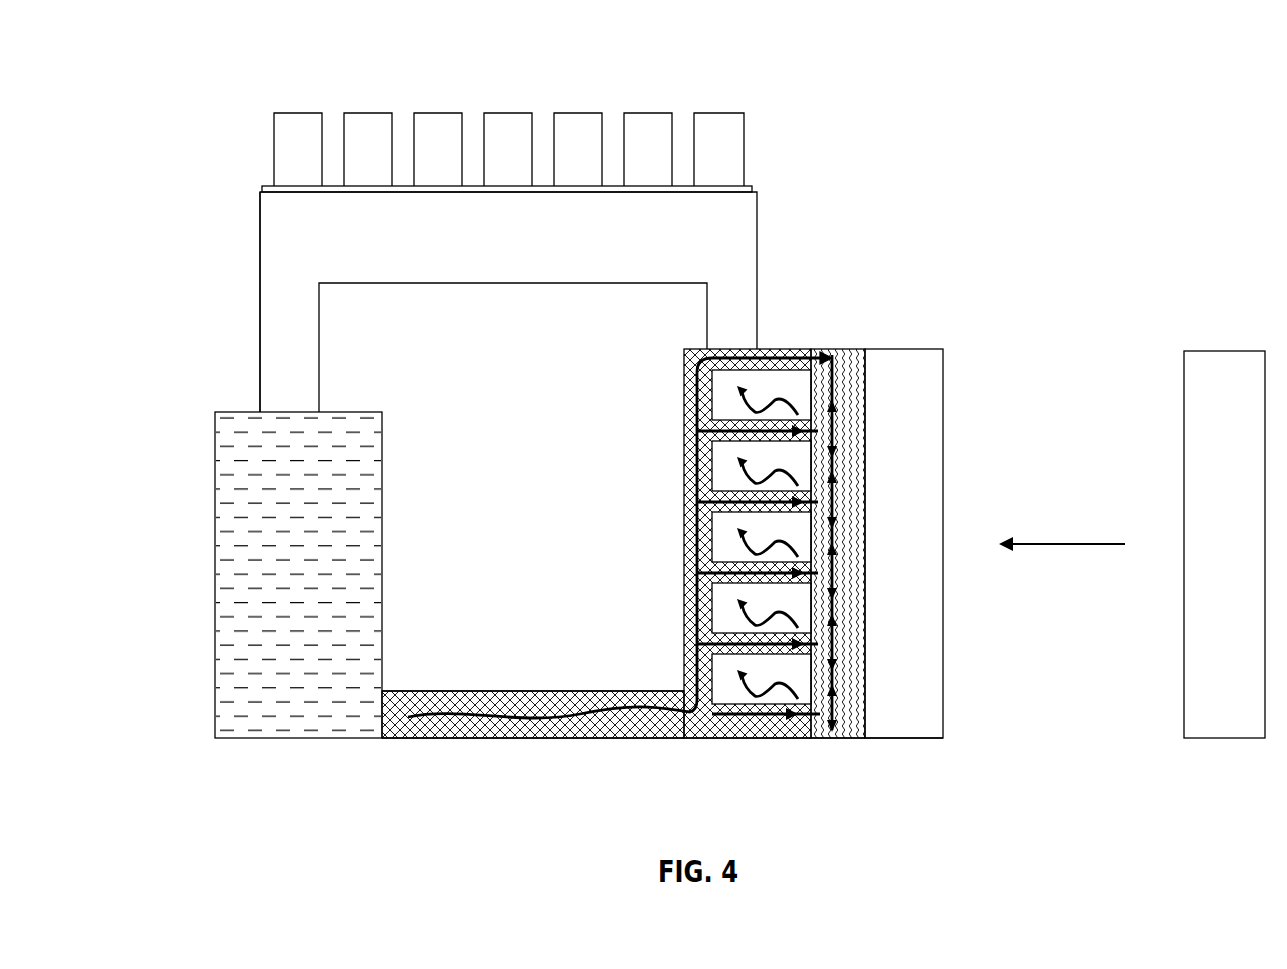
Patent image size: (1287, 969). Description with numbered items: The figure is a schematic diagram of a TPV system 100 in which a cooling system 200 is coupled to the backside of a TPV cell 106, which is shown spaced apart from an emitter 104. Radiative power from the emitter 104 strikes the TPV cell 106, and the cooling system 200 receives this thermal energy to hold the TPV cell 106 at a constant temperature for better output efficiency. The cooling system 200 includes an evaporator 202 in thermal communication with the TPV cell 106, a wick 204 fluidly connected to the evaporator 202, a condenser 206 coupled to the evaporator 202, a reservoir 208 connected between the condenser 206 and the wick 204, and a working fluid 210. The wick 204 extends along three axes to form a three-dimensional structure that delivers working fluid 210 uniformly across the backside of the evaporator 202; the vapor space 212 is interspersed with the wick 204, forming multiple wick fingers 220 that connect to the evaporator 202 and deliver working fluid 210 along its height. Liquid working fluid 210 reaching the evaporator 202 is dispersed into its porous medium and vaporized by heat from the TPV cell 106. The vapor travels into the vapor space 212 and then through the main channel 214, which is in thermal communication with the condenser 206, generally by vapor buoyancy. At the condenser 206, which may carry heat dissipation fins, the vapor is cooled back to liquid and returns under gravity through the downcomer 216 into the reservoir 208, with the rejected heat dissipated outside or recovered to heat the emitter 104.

The TPV system 100 is at (1065, 513).
The emitter 104 is at (1225, 351).
The TPV cell 106 is at (943, 400).
The cooling system 200 is at (540, 434).
The evaporator 202 is at (848, 349).
The wick 204 is at (570, 736).
The condenser 206 is at (507, 127).
The reservoir 208 is at (215, 473).
The working fluid 210 is at (255, 558).
The vapor space 212 is at (747, 694).
The main channel 214 is at (745, 230).
The downcomer 216 is at (268, 290).
The wick fingers 220 is at (798, 713).